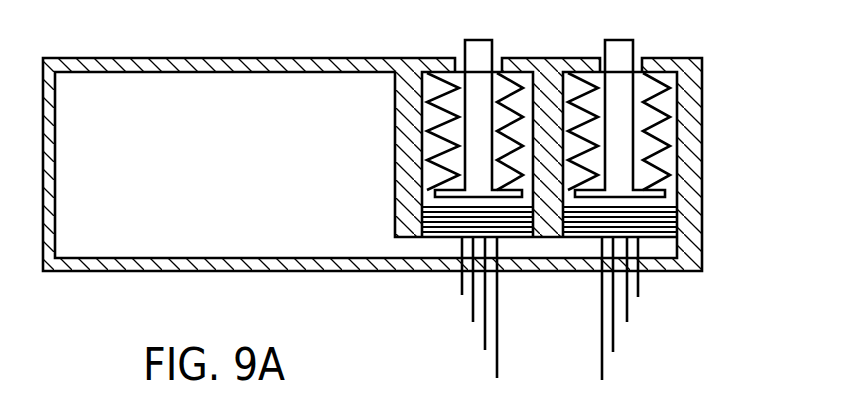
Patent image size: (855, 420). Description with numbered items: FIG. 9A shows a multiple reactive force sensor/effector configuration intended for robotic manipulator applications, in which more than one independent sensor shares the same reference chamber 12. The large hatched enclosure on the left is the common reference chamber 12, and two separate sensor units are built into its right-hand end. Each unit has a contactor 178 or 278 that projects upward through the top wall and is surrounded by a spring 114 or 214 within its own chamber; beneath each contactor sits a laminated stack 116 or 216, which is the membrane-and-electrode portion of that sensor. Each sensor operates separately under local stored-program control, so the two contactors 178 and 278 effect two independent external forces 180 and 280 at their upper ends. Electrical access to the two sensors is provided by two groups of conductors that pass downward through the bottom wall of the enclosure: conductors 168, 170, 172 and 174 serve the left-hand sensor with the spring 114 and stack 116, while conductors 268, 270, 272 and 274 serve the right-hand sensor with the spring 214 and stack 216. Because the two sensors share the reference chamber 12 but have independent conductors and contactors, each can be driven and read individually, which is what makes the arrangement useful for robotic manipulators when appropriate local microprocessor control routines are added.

The reference chamber 12 is at (257, 177).
The spring 114 is at (440, 127).
The layered electrode stack 116 is at (440, 215).
The lead wire 168 is at (462, 295).
The lead wire 170 is at (473, 322).
The lead wire 172 is at (485, 350).
The lead wire 174 is at (497, 378).
The contactor 178 is at (470, 52).
The external force 180 is at (435, 118).
The spring 214 is at (663, 135).
The layered electrode stack 216 is at (668, 212).
The lead wire 268 is at (613, 352).
The lead wire 270 is at (602, 380).
The lead wire 272 is at (638, 297).
The lead wire 274 is at (627, 322).
The contactor 278 is at (625, 52).
The external force 280 is at (662, 118).